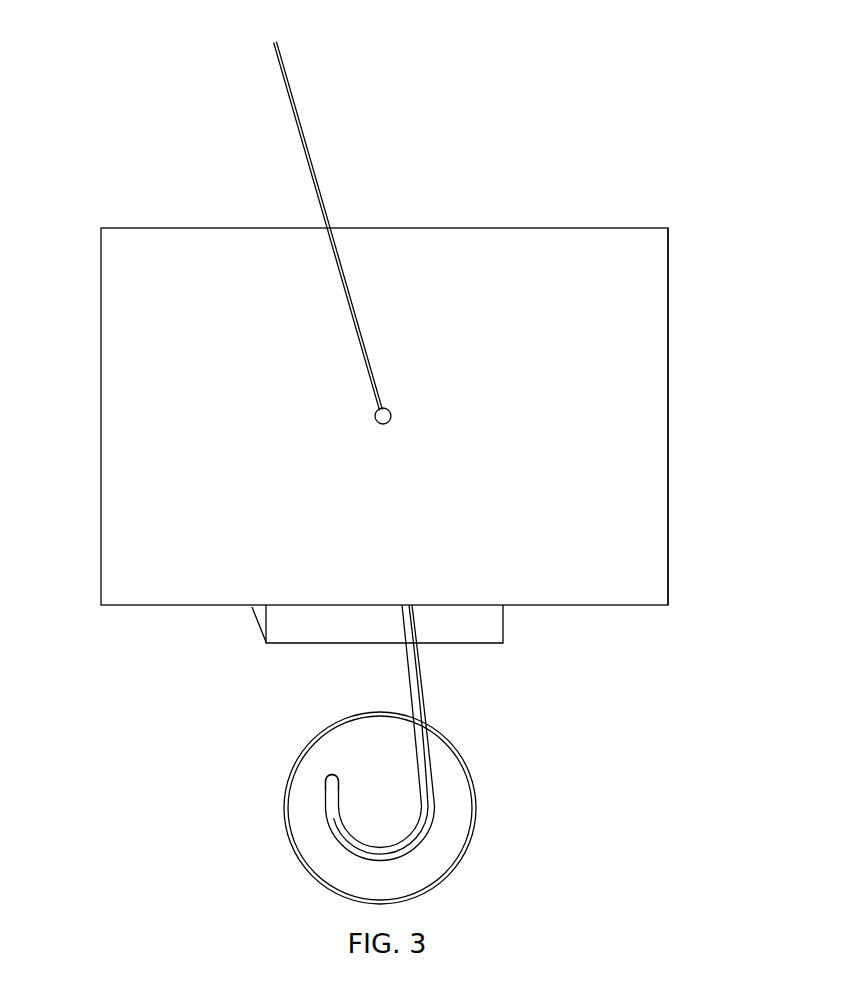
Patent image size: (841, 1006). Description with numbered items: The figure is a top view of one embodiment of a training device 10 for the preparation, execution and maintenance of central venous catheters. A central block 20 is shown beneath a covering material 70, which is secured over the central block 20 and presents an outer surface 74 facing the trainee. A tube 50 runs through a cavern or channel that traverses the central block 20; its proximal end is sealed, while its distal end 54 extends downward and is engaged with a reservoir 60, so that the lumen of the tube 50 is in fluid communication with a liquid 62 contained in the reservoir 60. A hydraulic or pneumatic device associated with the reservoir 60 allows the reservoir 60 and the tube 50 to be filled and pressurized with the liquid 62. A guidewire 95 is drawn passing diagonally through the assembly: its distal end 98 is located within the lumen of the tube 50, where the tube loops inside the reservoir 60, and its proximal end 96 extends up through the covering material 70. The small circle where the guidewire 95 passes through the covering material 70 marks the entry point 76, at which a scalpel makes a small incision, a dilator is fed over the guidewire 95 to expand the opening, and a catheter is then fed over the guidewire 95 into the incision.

The training device 10 is at (191, 93).
The central block 20 is at (288, 620).
The tube 50 is at (412, 655).
The distal end 54 is at (328, 838).
The reservoir 60 is at (448, 787).
The liquid 62 is at (447, 817).
The covering material 70 is at (133, 418).
The outer surface 74 is at (633, 397).
The entry point 76 is at (388, 426).
The guidewire 95 is at (355, 327).
The proximal end 96 is at (302, 130).
The distal end 98 is at (333, 787).